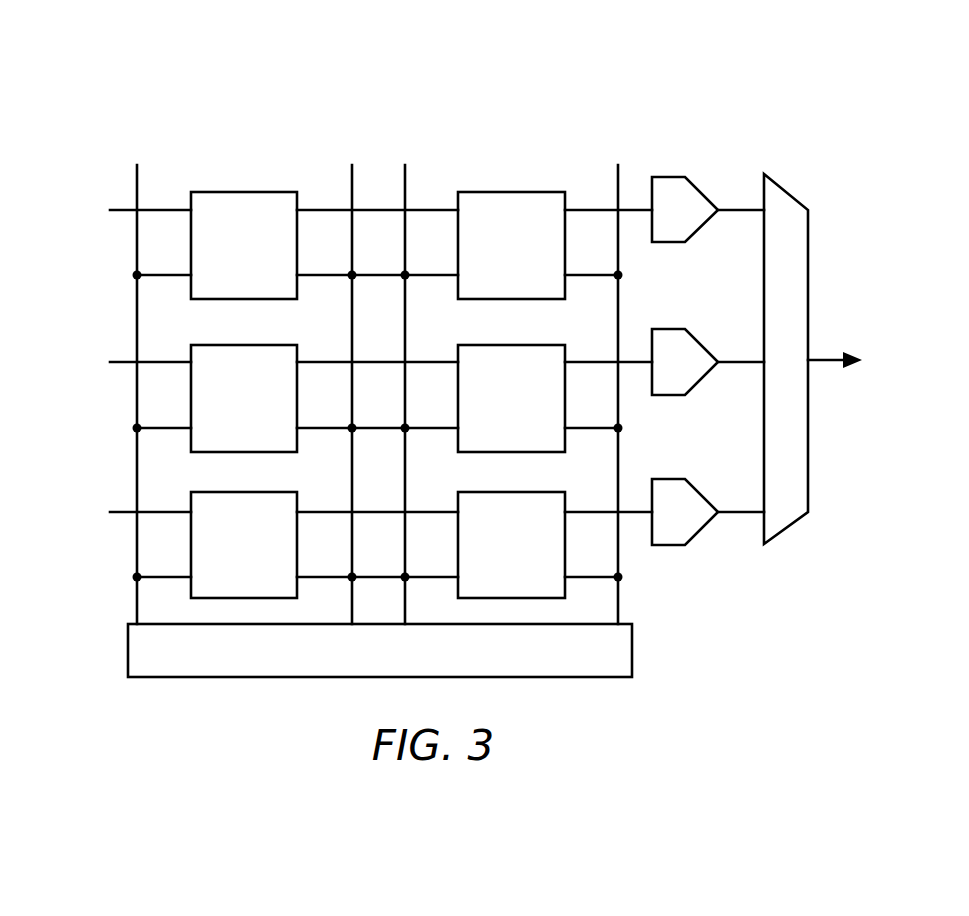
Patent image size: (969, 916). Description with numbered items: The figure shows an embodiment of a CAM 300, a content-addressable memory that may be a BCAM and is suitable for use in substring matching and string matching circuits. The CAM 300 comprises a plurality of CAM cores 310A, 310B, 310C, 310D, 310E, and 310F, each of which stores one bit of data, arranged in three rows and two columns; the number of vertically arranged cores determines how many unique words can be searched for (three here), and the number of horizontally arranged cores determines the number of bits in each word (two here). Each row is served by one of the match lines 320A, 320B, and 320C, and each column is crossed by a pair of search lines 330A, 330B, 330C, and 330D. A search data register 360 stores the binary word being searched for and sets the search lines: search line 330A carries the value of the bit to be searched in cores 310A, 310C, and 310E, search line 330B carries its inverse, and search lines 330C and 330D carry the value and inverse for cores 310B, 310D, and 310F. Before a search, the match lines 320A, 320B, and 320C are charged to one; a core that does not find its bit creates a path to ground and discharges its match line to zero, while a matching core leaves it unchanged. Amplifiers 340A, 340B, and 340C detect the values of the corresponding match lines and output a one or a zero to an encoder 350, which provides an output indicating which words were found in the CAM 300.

The CAM 300 is at (94, 70).
The CAM core 310A is at (244, 245).
The CAM core 310B is at (511, 245).
The CAM core 310C is at (244, 398).
The CAM core 310D is at (511, 398).
The CAM core 310E is at (244, 545).
The CAM core 310F is at (511, 545).
The match line 320A is at (123, 210).
The match line 320B is at (123, 362).
The match line 320C is at (123, 512).
The search line 330A is at (137, 165).
The search line 330B is at (352, 165).
The search line 330C is at (405, 165).
The search line 330D is at (618, 165).
The amplifier 340A is at (708, 209).
The amplifier 340B is at (708, 362).
The amplifier 340C is at (708, 512).
The encoder 350 is at (813, 359).
The search data register 360 is at (380, 650).